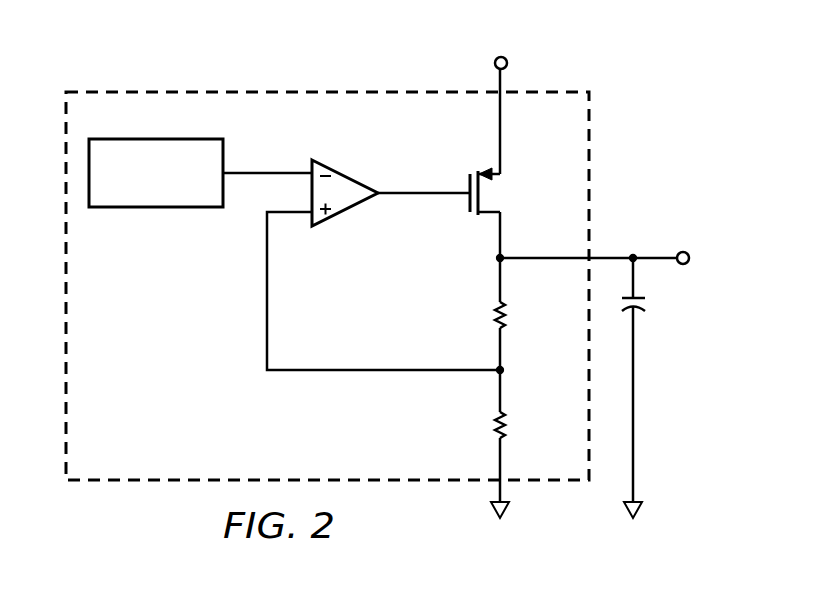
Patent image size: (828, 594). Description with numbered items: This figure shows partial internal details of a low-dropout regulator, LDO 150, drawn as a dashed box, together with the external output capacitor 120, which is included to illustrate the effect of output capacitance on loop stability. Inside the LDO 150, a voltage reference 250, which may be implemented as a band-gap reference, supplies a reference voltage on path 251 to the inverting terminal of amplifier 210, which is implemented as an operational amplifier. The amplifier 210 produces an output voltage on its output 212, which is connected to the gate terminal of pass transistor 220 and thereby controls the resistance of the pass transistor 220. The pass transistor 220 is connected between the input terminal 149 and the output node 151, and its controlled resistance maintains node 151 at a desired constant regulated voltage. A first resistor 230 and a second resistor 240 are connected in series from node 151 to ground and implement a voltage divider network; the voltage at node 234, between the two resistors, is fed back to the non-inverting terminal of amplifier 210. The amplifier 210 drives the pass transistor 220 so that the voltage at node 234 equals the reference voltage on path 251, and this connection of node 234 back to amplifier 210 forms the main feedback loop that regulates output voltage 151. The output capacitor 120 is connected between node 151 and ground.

The low-dropout regulator 150 is at (193, 92).
The voltage reference 250 is at (155, 208).
The path 251 is at (268, 170).
The amplifier 210 is at (344, 170).
The output 212 is at (424, 190).
The pass transistor 220 is at (468, 207).
The input terminal 149 is at (508, 63).
The node 151 is at (636, 254).
The first resistor 230 is at (508, 316).
The node 234 is at (497, 374).
The second resistor 240 is at (508, 428).
The output capacitor 120 is at (648, 303).